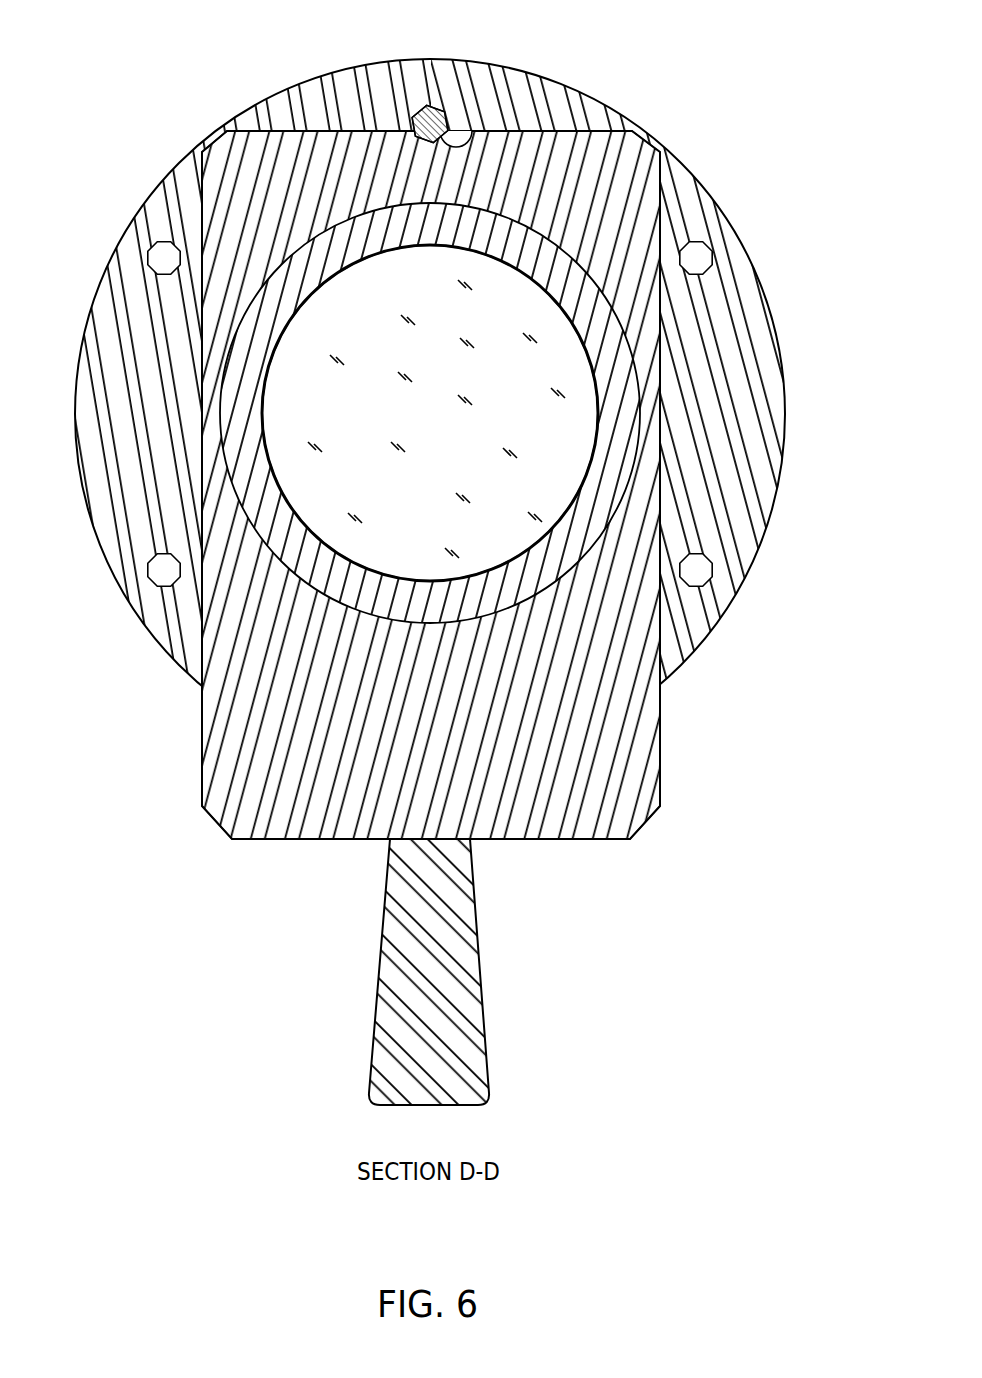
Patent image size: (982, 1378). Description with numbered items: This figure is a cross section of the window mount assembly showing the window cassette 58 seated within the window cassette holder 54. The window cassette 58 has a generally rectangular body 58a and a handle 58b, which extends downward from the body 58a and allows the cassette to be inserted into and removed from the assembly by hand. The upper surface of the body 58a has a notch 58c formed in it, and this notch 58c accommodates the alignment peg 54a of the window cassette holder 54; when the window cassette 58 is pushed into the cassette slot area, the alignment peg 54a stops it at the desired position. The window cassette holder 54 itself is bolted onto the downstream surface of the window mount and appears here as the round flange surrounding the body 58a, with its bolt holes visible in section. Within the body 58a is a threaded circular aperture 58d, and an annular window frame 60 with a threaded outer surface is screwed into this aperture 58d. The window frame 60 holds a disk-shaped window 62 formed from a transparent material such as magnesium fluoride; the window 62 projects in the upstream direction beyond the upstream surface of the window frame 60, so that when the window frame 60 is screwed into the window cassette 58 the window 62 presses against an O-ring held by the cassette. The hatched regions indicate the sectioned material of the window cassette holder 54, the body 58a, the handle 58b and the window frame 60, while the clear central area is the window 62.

The window cassette holder 54 is at (783, 345).
The alignment peg 54a is at (440, 107).
The window cassette 58 is at (637, 828).
The body 58a is at (257, 793).
The handle 58b is at (488, 1066).
The notch 58c is at (472, 131).
The threaded circular aperture 58d is at (575, 233).
The annular window frame 60 is at (303, 565).
The window 62 is at (567, 460).